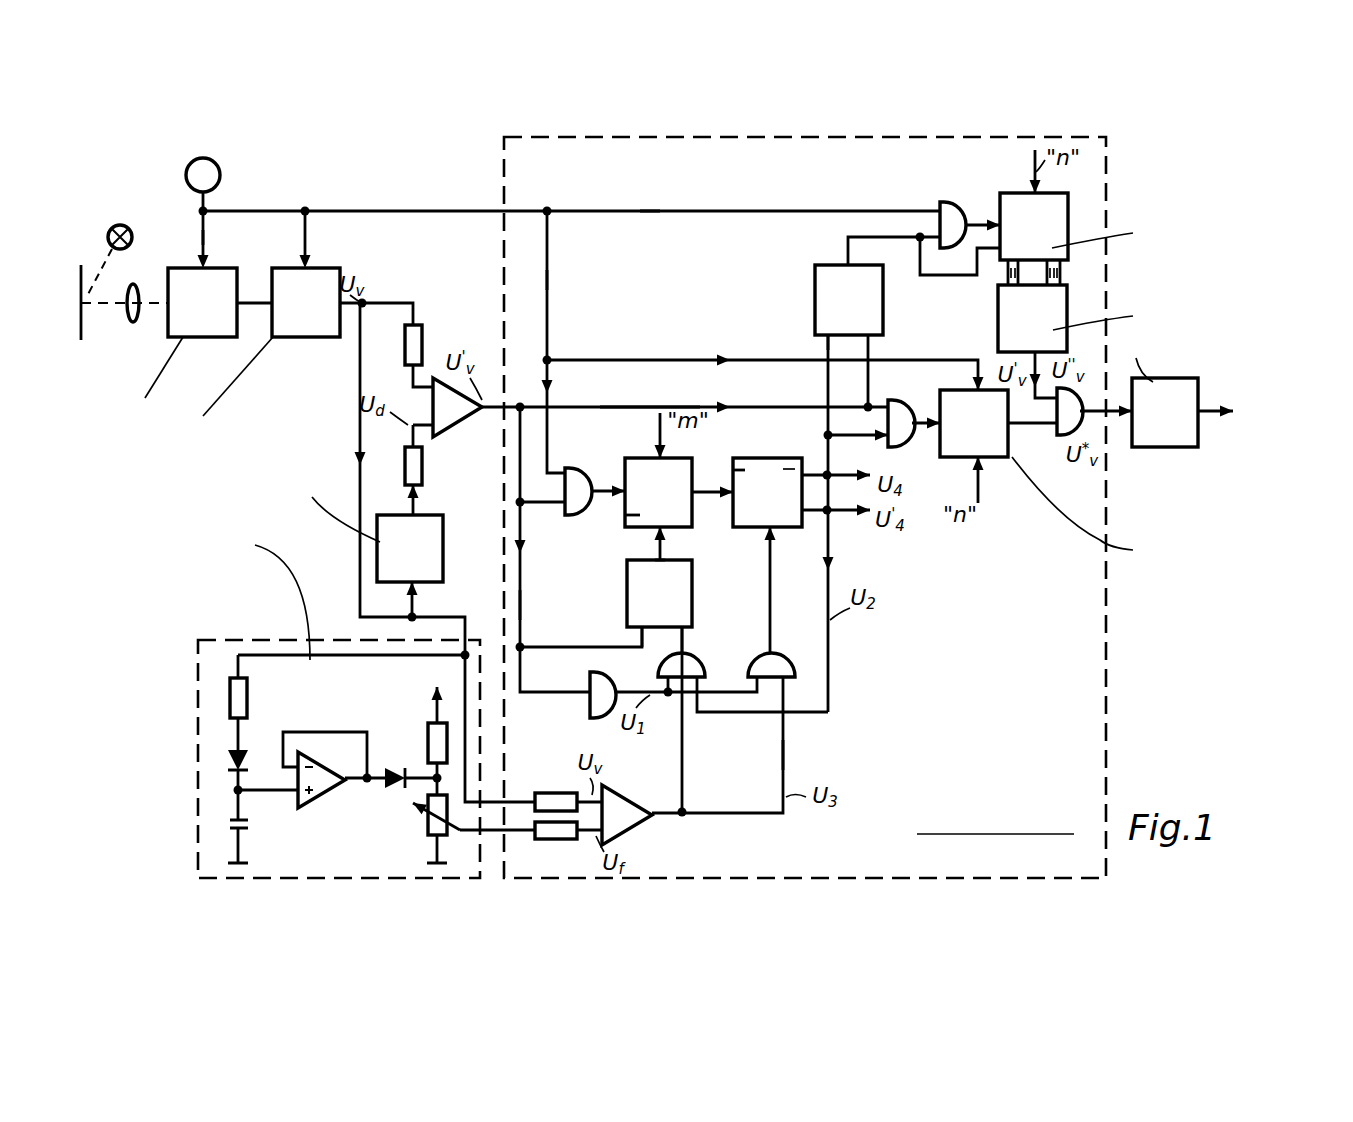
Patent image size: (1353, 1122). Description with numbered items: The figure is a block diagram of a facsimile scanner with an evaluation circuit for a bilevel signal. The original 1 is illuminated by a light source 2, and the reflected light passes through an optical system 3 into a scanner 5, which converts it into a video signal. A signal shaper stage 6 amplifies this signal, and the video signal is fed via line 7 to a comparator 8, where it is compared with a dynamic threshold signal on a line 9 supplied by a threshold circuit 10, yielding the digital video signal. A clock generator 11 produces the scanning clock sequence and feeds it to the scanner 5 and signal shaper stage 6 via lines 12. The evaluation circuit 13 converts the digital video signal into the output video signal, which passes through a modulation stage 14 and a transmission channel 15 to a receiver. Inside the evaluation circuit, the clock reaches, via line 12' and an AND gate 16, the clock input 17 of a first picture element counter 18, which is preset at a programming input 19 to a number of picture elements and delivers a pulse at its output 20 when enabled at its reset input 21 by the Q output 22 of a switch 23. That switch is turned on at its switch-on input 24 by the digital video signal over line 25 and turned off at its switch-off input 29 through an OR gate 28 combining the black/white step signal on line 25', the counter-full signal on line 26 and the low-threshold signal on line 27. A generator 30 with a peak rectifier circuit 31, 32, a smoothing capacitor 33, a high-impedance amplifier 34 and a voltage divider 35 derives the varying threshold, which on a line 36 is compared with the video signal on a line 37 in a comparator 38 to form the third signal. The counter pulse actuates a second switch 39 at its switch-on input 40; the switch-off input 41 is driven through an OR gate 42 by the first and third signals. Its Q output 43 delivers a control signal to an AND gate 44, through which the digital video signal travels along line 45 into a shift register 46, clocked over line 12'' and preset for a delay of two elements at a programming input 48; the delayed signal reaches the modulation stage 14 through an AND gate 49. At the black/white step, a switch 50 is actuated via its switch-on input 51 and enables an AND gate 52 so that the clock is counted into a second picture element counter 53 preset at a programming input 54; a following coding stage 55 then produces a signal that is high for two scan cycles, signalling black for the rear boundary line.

The original 1 is at (86, 330).
The light source 2 is at (116, 224).
The optical system 3 is at (138, 318).
The scanner 5 is at (205, 337).
The signal shaper stage 6 is at (296, 337).
The line 7 is at (393, 303).
The comparator 8 is at (456, 425).
The line 9 is at (420, 507).
The threshold circuit 10 is at (430, 550).
The clock generator 11 is at (221, 173).
The lines 12 is at (226, 237).
The line 12' is at (574, 269).
The line 12'' is at (765, 282).
The evaluation circuit 13 is at (1088, 672).
The modulation stage 14 is at (1148, 448).
The transmission channel 15 is at (1208, 418).
The AND gate 16 is at (573, 465).
The clock input 17 is at (622, 478).
The first picture element counter 18 is at (624, 522).
The programming input 19 is at (655, 452).
The output 20 is at (695, 487).
The reset input 21 is at (652, 530).
The Q output 22 is at (668, 562).
The switch 23 is at (692, 592).
The switch-on input 24 is at (636, 630).
The line 25 is at (545, 604).
The line 25' is at (634, 710).
The line 26 is at (828, 670).
The line 27 is at (786, 754).
The OR gate 28 is at (660, 668).
The switch-off input 29 is at (688, 630).
The generator 30 is at (240, 640).
The peak rectifier circuit 31 is at (248, 690).
The peak rectifier circuit 32 is at (245, 755).
The smoothing capacitor 33 is at (250, 826).
The high-impedance amplifier 34 is at (330, 795).
The voltage divider 35 is at (425, 745).
The line 36 is at (516, 838).
The line 37 is at (517, 795).
The comparator 38 is at (638, 830).
The second switch 39 is at (763, 462).
The switch-on input 40 is at (736, 466).
The switch-off input 41 is at (765, 532).
The OR gate 42 is at (777, 655).
The Q output 43 is at (826, 470).
The AND gate 44 is at (897, 410).
The line 45 is at (667, 405).
The shift register 46 is at (965, 455).
The programming input 48 is at (990, 460).
The AND gate 49 is at (1060, 430).
The switch 50 is at (812, 290).
The switch-on input 51 is at (822, 338).
The AND gate 52 is at (948, 205).
The second picture element counter 53 is at (1058, 227).
The programming input 54 is at (1030, 185).
The coding stage 55 is at (1012, 320).